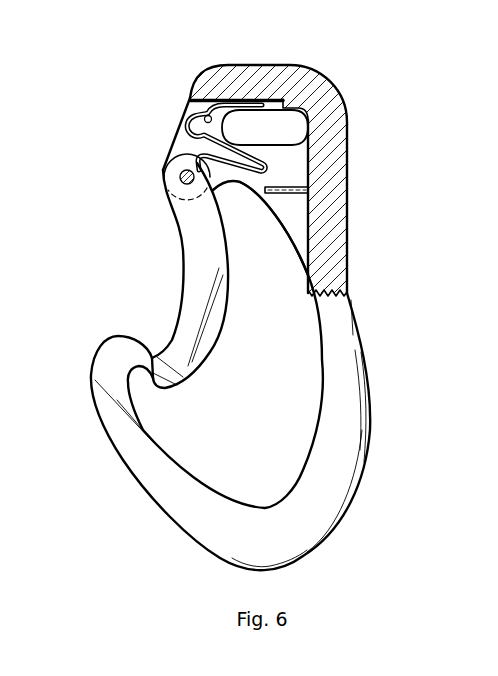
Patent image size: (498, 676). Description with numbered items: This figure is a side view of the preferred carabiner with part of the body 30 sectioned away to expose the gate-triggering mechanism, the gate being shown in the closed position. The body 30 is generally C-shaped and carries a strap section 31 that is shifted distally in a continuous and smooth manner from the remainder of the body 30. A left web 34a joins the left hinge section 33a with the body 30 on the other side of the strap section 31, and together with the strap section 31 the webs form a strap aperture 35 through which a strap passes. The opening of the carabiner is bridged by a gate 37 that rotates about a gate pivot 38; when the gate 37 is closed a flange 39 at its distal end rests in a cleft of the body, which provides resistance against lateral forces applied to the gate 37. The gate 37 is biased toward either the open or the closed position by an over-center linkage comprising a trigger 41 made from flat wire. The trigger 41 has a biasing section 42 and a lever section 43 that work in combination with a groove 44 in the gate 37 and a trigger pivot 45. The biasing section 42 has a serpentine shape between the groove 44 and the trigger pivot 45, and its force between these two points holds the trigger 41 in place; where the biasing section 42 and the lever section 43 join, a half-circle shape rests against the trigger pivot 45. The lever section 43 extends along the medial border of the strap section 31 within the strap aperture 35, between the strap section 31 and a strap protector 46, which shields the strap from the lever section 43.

The body 30 is at (337, 383).
The strap section 31 is at (293, 68).
The left hinge section 33a is at (187, 148).
The left web 34a is at (283, 182).
The strap aperture 35 is at (330, 120).
The gate 37 is at (198, 292).
The gate pivot 38 is at (181, 172).
The flange 39 is at (147, 387).
The trigger 41 is at (199, 117).
The biasing section 42 is at (282, 126).
The lever section 43 is at (243, 108).
The groove 44 is at (185, 166).
The trigger pivot 45 is at (206, 117).
The strap protector 46 is at (265, 193).